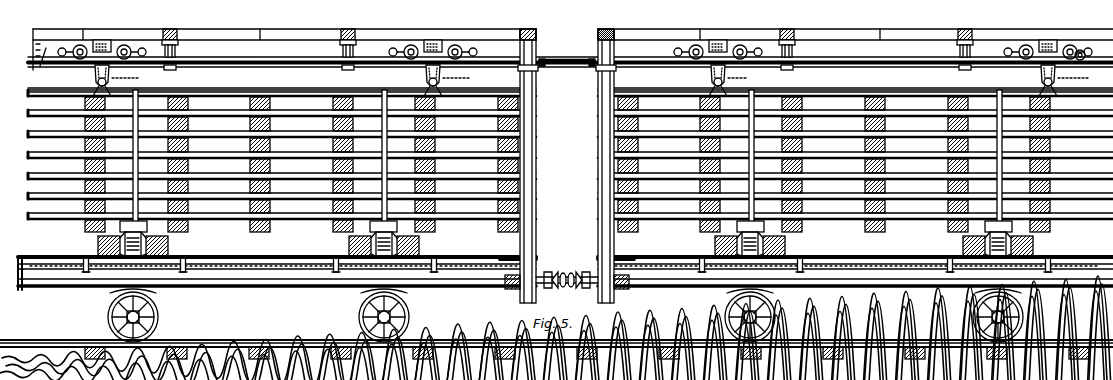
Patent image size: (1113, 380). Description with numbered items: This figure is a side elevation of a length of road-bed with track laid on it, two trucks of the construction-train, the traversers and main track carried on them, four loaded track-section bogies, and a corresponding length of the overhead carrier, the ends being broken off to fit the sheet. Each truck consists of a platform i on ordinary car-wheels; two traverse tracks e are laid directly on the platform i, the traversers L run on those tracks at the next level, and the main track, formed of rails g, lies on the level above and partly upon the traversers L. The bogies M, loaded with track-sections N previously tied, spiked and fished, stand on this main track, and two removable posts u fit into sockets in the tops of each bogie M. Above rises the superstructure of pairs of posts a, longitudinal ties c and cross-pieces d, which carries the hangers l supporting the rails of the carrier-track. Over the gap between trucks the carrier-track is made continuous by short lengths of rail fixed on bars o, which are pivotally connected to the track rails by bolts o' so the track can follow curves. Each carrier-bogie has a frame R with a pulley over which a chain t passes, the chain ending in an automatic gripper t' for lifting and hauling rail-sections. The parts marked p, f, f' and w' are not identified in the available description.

The end plate p is at (24, 60).
The longitudinal ties c is at (1088, 52).
The bogie frame R is at (108, 42).
The automatic gripper t' is at (574, 150).
The chain t is at (606, 78).
The hangers l is at (976, 76).
The top beam f is at (573, 55).
The removable posts u is at (139, 100).
The track-sections N is at (836, 82).
The cross-pieces d is at (596, 34).
The rail section f' is at (567, 50).
The posts a is at (537, 78).
The bars o is at (555, 74).
The bolts o' is at (588, 74).
The post base w' is at (572, 215).
The rails of the main track g is at (76, 256).
The bogies M is at (170, 244).
The traverse tracks e is at (85, 274).
The traversers L is at (120, 268).
The platform i is at (565, 282).